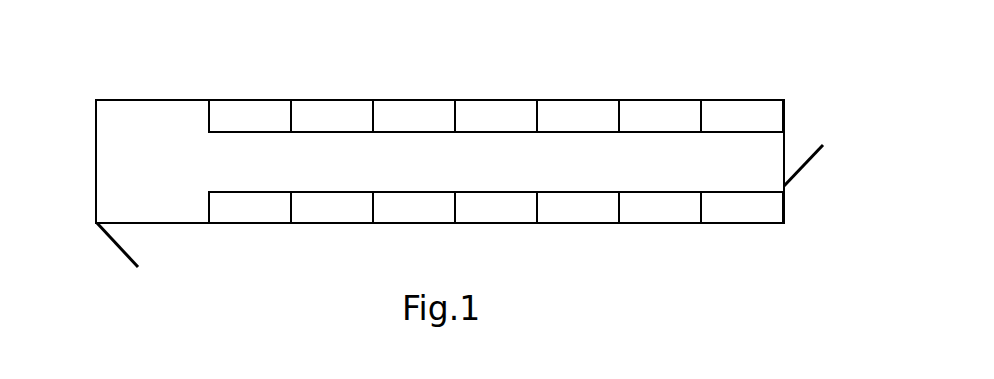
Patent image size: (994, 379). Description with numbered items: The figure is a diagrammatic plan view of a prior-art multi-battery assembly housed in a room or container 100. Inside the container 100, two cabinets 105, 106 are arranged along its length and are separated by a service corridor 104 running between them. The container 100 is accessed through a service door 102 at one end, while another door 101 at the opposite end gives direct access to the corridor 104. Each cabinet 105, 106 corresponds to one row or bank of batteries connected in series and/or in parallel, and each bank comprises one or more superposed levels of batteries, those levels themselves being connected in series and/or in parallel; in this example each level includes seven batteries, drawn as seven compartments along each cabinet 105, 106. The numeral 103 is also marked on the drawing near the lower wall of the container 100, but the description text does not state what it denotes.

The room or container 100 is at (156, 99).
The door 101 is at (807, 165).
The service door 102 is at (113, 243).
The bottom housing wall 103 is at (168, 247).
The service corridor 104 is at (757, 162).
The cabinet 105 is at (673, 83).
The cabinet 106 is at (675, 240).